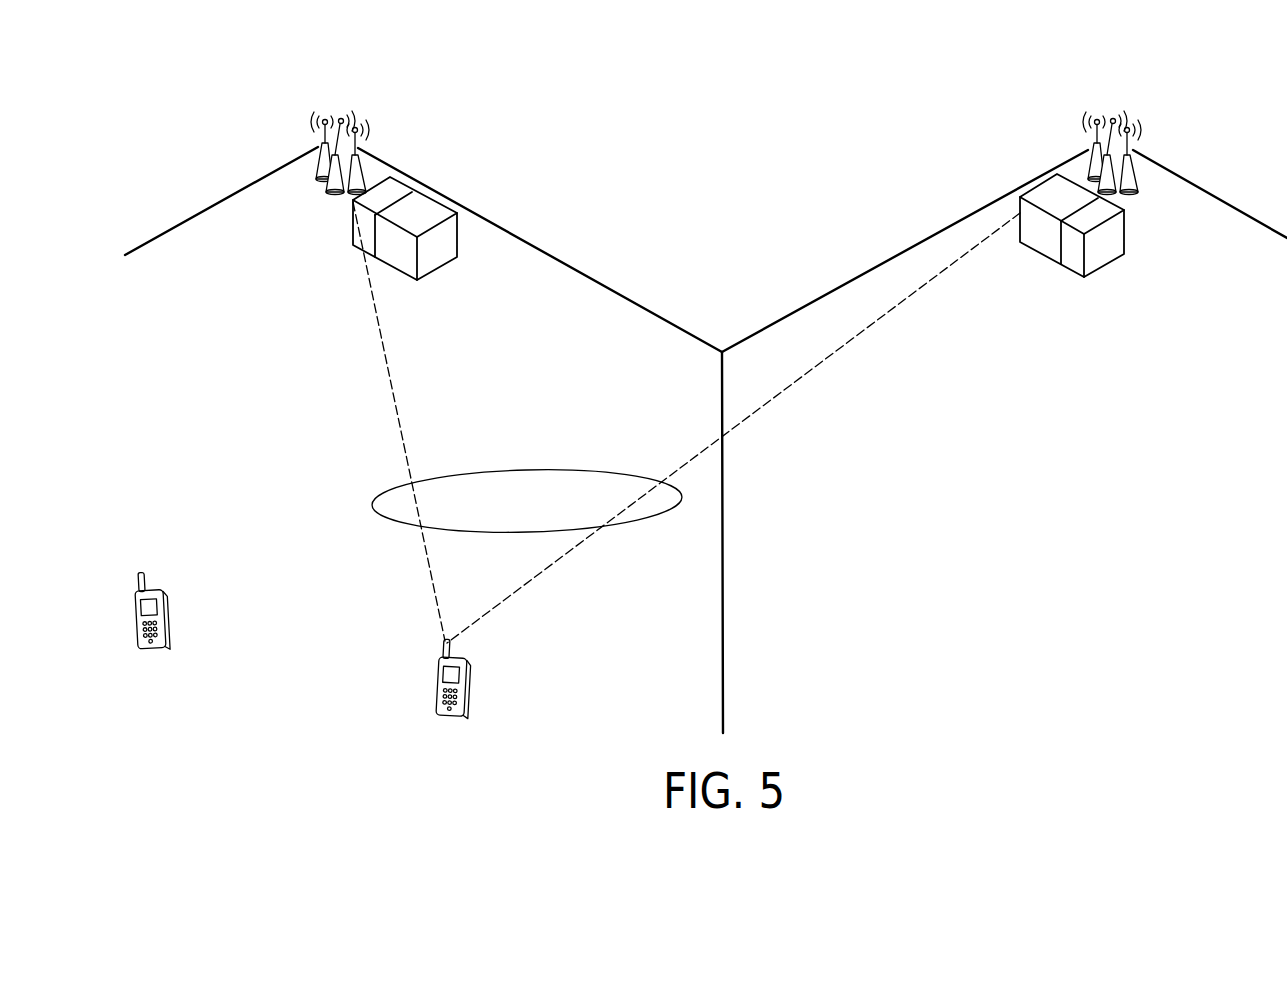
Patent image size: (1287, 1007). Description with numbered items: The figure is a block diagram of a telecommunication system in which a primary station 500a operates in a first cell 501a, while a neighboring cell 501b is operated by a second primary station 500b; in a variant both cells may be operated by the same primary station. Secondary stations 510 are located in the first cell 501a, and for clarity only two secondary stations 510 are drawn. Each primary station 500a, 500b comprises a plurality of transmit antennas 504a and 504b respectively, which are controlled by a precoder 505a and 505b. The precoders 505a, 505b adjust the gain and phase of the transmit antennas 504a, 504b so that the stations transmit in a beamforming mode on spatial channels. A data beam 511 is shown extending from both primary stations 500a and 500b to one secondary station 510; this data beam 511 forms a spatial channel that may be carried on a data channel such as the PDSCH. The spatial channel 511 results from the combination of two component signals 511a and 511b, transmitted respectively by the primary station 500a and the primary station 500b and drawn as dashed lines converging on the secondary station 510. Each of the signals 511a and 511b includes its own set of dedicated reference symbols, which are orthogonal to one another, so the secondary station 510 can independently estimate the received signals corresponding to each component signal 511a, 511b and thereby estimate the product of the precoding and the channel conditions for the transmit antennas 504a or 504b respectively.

The primary station 500a is at (456, 273).
The primary station 500b is at (1121, 273).
The first cell 501a is at (540, 383).
The neighboring cell 501b is at (1063, 499).
The transmit antennas 504a is at (320, 186).
The transmit antennas 504b is at (1143, 180).
The precoder 505a is at (421, 210).
The precoder 505b is at (1077, 256).
The secondary station 510 is at (167, 620).
The data beam 511 is at (372, 502).
The component signal 511a is at (385, 358).
The component signal 511b is at (825, 365).